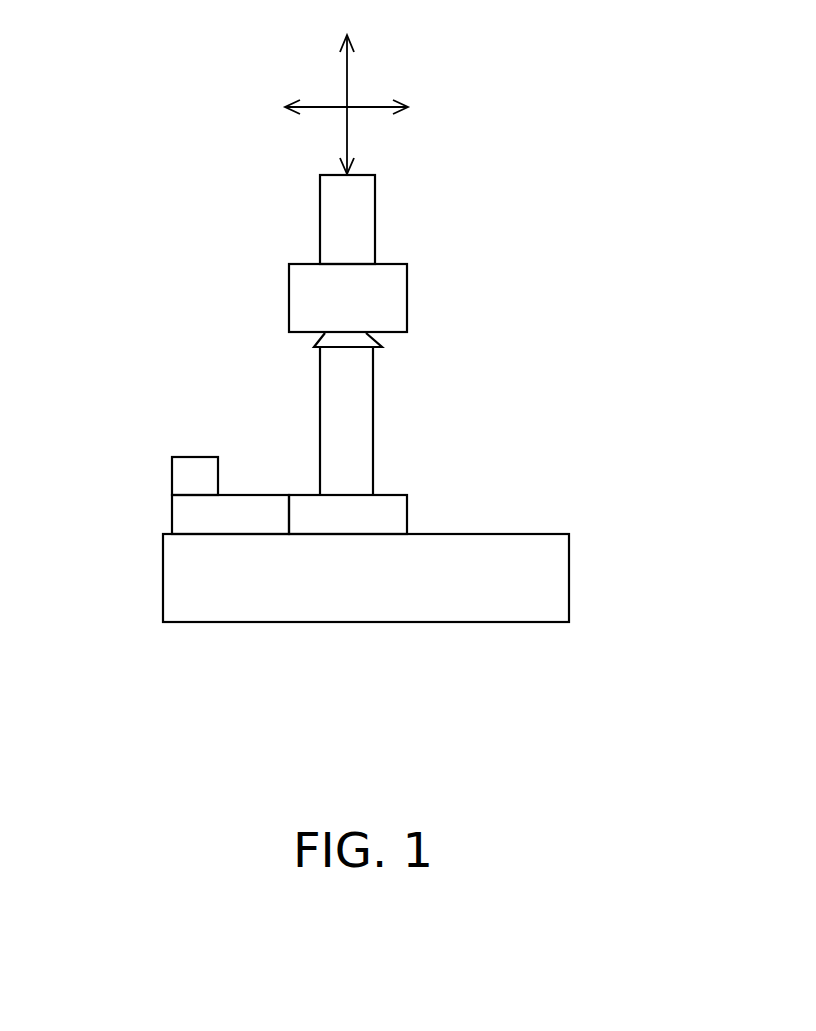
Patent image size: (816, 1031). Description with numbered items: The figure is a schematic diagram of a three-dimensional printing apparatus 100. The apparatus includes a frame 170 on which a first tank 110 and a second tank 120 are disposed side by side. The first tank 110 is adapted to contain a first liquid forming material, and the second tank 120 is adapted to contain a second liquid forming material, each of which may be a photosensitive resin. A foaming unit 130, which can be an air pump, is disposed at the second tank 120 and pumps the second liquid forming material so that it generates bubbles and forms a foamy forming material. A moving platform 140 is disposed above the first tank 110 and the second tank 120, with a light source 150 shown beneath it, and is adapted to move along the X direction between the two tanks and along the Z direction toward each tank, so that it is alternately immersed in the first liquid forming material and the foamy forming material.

The three-dimensional printing apparatus 100 is at (397, 337).
The first tank 110 is at (407, 515).
The second tank 120 is at (172, 512).
The foaming unit 130 is at (172, 477).
The moving platform 140 is at (375, 220).
The light source 150 is at (407, 300).
The frame 170 is at (557, 577).